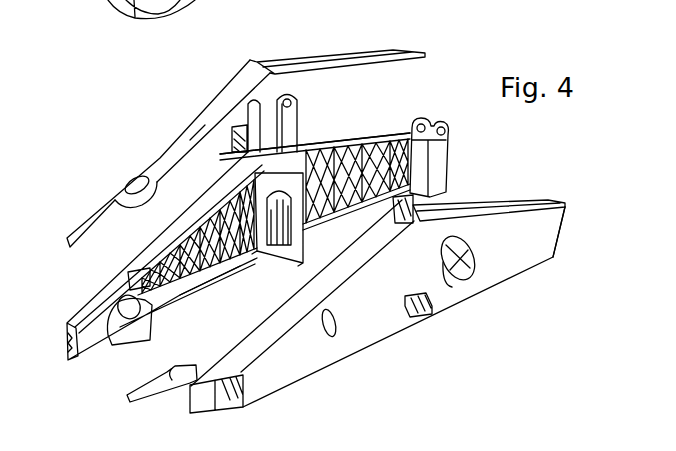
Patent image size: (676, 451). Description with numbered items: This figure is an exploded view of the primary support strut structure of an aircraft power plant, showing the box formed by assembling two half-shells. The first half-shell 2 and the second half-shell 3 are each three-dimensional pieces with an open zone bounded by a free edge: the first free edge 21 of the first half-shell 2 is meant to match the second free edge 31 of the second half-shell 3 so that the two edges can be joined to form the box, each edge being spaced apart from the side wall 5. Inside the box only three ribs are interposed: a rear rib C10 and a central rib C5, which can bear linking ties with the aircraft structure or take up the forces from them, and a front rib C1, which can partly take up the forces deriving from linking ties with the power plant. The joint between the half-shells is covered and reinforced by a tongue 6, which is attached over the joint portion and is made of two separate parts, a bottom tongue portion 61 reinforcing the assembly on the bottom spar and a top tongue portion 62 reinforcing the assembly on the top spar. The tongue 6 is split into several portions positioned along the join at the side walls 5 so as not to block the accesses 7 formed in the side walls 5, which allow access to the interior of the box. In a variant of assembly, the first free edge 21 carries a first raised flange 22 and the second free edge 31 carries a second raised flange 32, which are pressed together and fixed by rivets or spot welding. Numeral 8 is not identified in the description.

The top tongue portion 62 is at (363, 50).
The tongue 6 is at (168, 153).
The rail side wall 8 is at (192, 134).
The second half-shell 3 is at (136, 248).
The central rib C5 is at (311, 150).
The side wall 5 is at (363, 147).
The rear rib C10 is at (455, 158).
The first free edge 21 is at (500, 194).
The first half-shell 2 is at (502, 257).
The access 7 is at (462, 316).
The front rib C1 is at (147, 335).
The bottom tongue portion 61 is at (145, 405).
The second free edge 31 is at (200, 298).
The second raised flange 32 is at (436, 450).
The first raised flange 22 is at (516, 447).